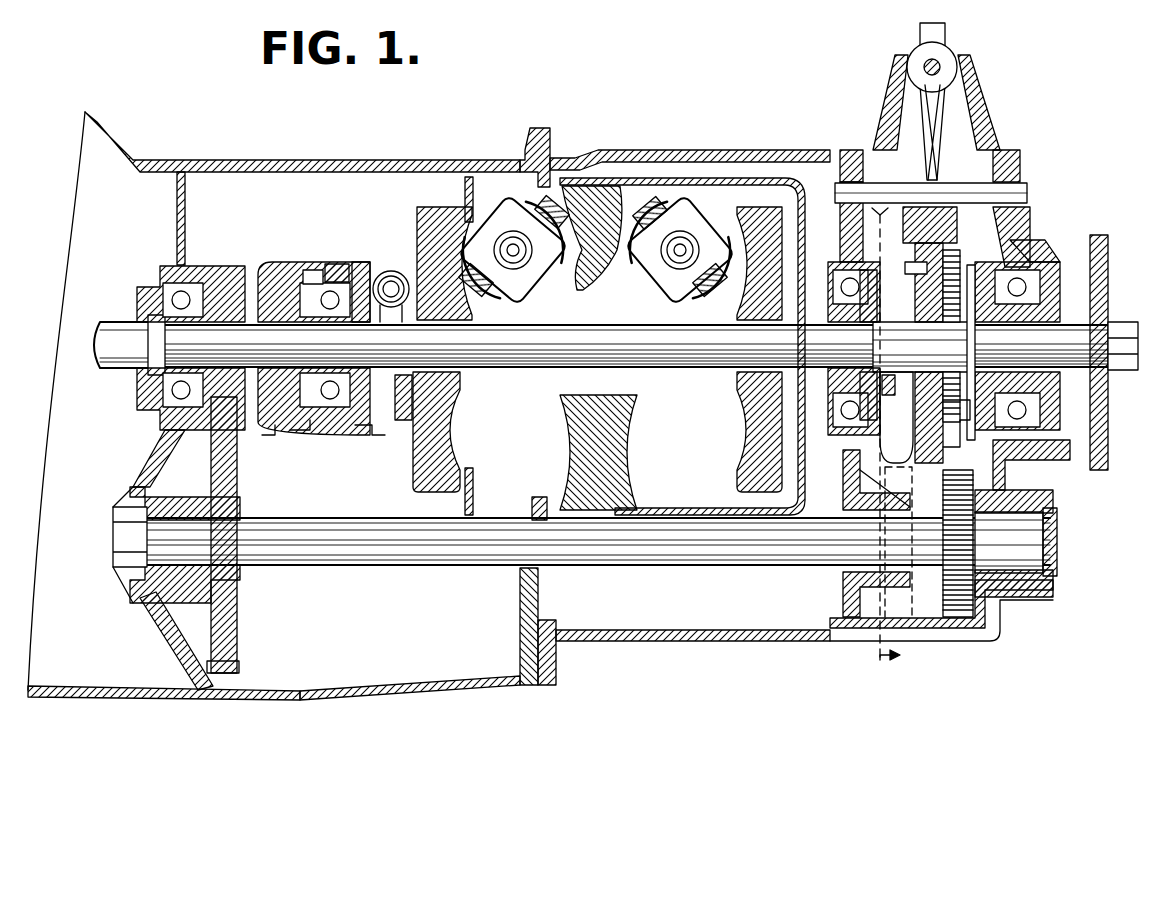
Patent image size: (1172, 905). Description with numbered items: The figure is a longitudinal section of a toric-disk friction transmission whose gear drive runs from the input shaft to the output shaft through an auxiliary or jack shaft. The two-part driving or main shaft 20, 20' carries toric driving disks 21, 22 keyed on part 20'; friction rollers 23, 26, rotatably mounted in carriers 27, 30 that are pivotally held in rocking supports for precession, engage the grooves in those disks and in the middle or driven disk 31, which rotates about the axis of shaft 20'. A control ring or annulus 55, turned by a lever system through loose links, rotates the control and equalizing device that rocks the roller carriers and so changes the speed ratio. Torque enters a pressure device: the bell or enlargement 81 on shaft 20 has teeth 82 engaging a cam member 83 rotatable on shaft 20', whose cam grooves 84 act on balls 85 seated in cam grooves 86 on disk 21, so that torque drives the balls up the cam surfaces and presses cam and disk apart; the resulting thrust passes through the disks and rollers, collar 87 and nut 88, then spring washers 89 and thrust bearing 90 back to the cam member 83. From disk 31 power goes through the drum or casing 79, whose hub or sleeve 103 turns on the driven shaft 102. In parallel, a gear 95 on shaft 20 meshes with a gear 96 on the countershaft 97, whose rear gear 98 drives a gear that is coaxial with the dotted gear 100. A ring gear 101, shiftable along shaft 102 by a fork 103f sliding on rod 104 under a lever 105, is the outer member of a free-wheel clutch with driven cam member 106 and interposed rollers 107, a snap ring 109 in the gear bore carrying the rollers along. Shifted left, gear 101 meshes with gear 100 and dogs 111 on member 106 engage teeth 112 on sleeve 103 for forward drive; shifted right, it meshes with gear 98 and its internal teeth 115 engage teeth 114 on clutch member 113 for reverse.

The driving or main shaft (first part) 20 is at (123, 366).
The driving or main shaft (second part) 20' is at (640, 368).
The toric driving disk 21 is at (428, 222).
The toric driving disk 22 is at (762, 225).
The friction roller 23 is at (528, 225).
The friction roller 26 is at (665, 215).
The roller carrier 27 is at (530, 285).
The roller carrier 30 is at (668, 288).
The middle or driven disk 31 is at (615, 195).
The control ring or annulus 55 is at (465, 500).
The drum or casing 79 is at (680, 178).
The bell or enlargement 81 is at (296, 275).
The teeth 82 is at (340, 268).
The cam member 83 is at (362, 268).
The cam grooves 84 is at (372, 428).
The balls 85 is at (393, 285).
The cam grooves 86 is at (405, 418).
The collar 87 is at (738, 400).
The nut 88 is at (274, 436).
The spring washers 89 is at (302, 430).
The thrust bearing 90 is at (315, 275).
The gear 95 is at (228, 282).
The gear 96 is at (238, 618).
The countershaft 97 is at (372, 568).
The gear 98 is at (977, 481).
The gear 100 is at (903, 640).
The gear (ring gear) 101 is at (947, 458).
The driven shaft 102 is at (1115, 328).
The hub or sleeve 103 is at (840, 268).
The fork 103f is at (945, 180).
The rod 104 is at (1027, 190).
The lever 105 is at (940, 42).
The driven cam member 106 is at (913, 303).
The rollers 107 is at (965, 288).
The snap ring 109 is at (910, 267).
The dogs or teeth 111 is at (902, 417).
The teeth 112 is at (898, 393).
The clutch member 113 is at (1048, 305).
The teeth 114 is at (1010, 270).
The internal teeth 115 is at (963, 418).